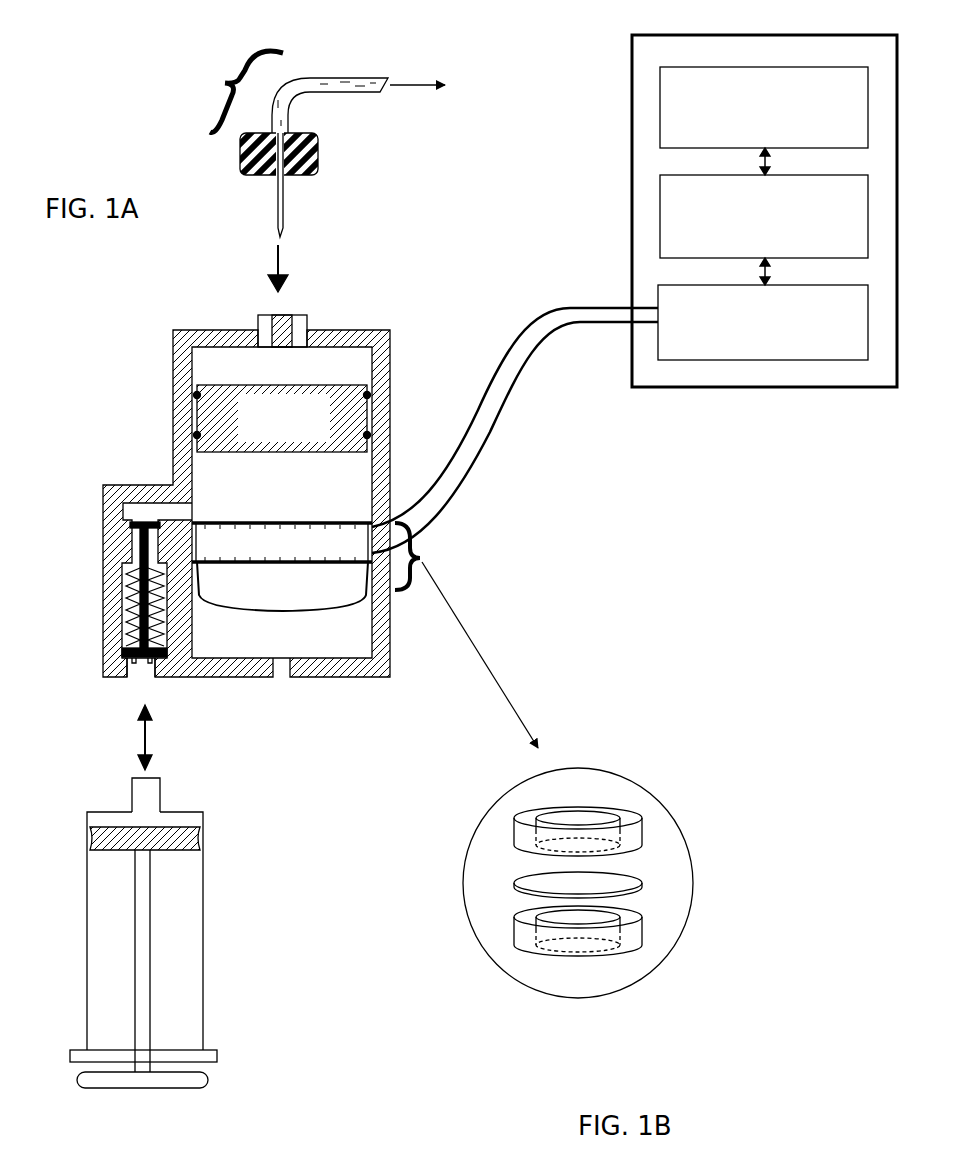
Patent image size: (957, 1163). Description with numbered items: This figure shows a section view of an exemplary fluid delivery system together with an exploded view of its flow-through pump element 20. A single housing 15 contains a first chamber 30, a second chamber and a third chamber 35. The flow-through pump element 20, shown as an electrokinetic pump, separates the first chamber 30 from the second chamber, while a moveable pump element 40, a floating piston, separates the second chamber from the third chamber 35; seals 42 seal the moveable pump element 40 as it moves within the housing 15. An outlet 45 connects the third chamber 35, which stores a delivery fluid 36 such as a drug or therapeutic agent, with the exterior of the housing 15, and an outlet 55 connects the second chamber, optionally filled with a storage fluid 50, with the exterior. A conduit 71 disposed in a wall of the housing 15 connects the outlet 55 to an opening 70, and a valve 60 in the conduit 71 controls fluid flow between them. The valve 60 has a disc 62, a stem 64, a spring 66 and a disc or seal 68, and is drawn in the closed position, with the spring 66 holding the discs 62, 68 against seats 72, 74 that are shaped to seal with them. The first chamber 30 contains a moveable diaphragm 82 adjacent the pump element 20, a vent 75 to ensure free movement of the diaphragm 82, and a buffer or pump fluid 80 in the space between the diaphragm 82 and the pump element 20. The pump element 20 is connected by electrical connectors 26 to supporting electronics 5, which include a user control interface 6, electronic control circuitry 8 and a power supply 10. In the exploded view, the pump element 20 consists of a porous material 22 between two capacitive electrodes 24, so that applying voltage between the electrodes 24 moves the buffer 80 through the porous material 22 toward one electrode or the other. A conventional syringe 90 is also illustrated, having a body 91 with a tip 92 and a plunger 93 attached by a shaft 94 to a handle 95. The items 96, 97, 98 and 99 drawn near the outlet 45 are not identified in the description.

In FIG. 1A, the supporting electronics 5 is at (632, 388).
In FIG. 1A, the user control interface 6 is at (764, 107).
In FIG. 1A, the electronic control circuitry 8 is at (764, 216).
In FIG. 1A, the power supply 10 is at (763, 322).
In FIG. 1A, the housing 15 is at (170, 362).
In FIG. 1A, the flow through pump element 20 is at (282, 542).
In FIG. 1B, the flow through pump element 20 is at (588, 758).
In FIG. 1B, the porous material 22 is at (650, 885).
In FIG. 1B, the capacitive electrodes 24 is at (602, 806).
In FIG. 1A, the electrical connectors 26 is at (465, 425).
In FIG. 1B, the electrical connectors 26 is at (668, 840).
In FIG. 1A, the first chamber 30 is at (360, 642).
In FIG. 1A, the third chamber 35 is at (212, 360).
In FIG. 1A, the delivery fluid 36 is at (374, 225).
In FIG. 1A, the moveable pump element 40 is at (282, 418).
In FIG. 1A, the seals 42 is at (194, 396).
In FIG. 1A, the outlet 45 is at (310, 315).
In FIG. 1A, the storage fluid 50 is at (284, 483).
In FIG. 1A, the outlet 55 is at (138, 502).
In FIG. 1A, the valve 60 is at (192, 510).
In FIG. 1A, the disc 62 is at (122, 532).
In FIG. 1A, the stem 64 is at (128, 564).
In FIG. 1A, the spring 66 is at (122, 600).
In FIG. 1A, the disc or seal 68 is at (118, 652).
In FIG. 1A, the opening 70 is at (137, 666).
In FIG. 1A, the conduit 71 is at (105, 578).
In FIG. 1A, the seat 72 is at (122, 508).
In FIG. 1A, the seat 74 is at (170, 660).
In FIG. 1A, the vent 75 is at (280, 670).
In FIG. 1A, the buffer or pump fluid 80 is at (282, 586).
In FIG. 1A, the diaphragm 82 is at (318, 616).
In FIG. 1A, the syringe 90 is at (207, 872).
In FIG. 1A, the body 91 is at (205, 1018).
In FIG. 1A, the tip 92 is at (130, 786).
In FIG. 1A, the plunger 93 is at (172, 828).
In FIG. 1A, the shaft 94 is at (150, 965).
In FIG. 1A, the handle 95 is at (210, 1082).
In FIG. 1A, the needle assembly 96 is at (240, 91).
In FIG. 1A, the needle 97 is at (284, 222).
In FIG. 1A, the tube 98 is at (352, 78).
In FIG. 1A, the needle hub 99 is at (320, 160).